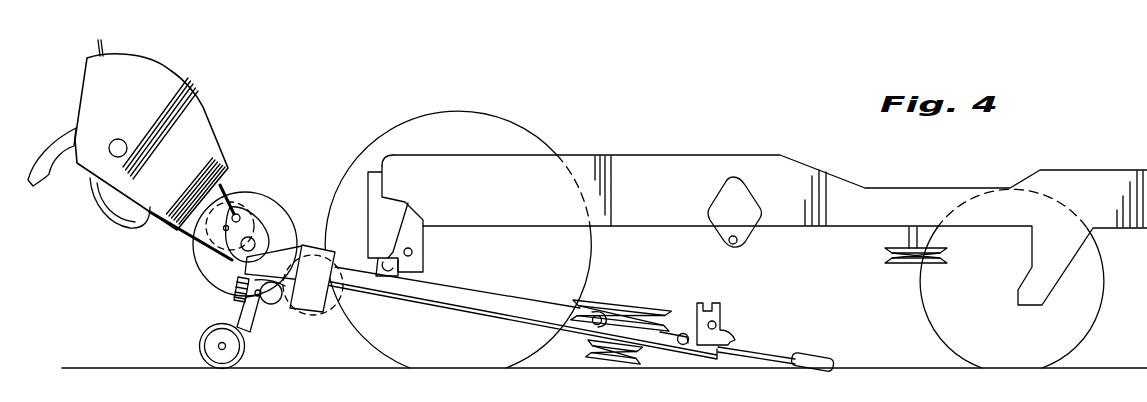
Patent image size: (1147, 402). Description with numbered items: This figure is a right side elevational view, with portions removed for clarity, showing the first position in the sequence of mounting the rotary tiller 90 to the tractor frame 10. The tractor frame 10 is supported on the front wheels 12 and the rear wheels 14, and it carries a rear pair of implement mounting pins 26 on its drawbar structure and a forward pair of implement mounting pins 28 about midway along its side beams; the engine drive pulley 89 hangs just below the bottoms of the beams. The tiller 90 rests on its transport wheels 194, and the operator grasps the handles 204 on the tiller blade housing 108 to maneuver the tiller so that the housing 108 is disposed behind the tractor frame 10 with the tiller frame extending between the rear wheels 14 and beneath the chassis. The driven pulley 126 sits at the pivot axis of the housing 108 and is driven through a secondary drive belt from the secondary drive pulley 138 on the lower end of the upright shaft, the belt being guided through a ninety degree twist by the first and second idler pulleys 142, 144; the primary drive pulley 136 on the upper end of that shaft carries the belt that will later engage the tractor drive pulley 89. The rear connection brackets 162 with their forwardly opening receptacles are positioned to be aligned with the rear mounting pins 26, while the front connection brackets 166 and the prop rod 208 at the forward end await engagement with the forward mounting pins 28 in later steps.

The tractor frame 10 is at (750, 145).
The front wheels 12 is at (1105, 297).
The rear wheels 14 is at (541, 138).
The rear implement mounting pins 26 is at (413, 252).
The forward implement mounting pins 28 is at (742, 245).
The drive pulley 89 is at (903, 263).
The rotary tiller 90 is at (453, 322).
The tiller blade housing 108 is at (204, 103).
The driven pulley 126 is at (259, 206).
The primary drive pulley 136 is at (651, 300).
The secondary drive pulley 138 is at (600, 362).
The first idler pulley 142 is at (308, 318).
The second idler pulley 144 is at (262, 312).
The rear connection brackets 162 is at (406, 206).
The front connection brackets 166 is at (728, 315).
The transport wheels 194 is at (205, 344).
The handles 204 is at (87, 60).
The prop rod 208 is at (590, 323).